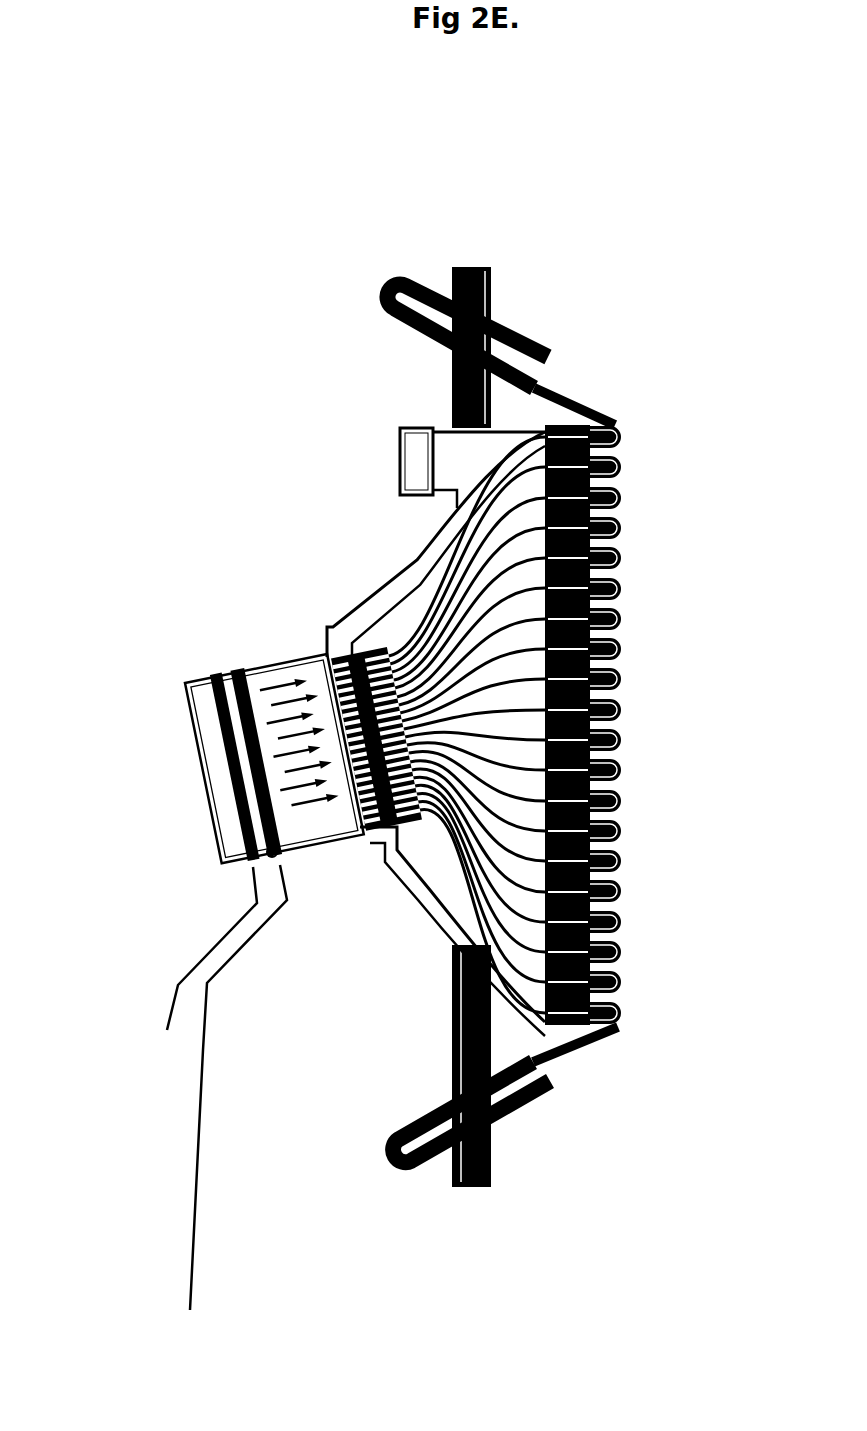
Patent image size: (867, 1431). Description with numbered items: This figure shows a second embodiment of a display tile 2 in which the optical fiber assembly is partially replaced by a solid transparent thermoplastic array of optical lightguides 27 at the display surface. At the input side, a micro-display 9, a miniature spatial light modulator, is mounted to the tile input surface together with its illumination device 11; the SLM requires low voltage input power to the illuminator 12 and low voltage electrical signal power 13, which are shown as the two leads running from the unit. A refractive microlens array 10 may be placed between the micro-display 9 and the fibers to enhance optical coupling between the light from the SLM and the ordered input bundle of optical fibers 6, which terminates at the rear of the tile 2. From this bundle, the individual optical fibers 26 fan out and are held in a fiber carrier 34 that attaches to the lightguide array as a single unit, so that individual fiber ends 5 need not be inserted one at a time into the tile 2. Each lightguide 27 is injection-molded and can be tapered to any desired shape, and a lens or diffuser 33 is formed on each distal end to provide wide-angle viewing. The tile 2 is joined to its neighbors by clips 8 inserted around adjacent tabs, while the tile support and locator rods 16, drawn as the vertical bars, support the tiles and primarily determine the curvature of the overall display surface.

The tile 2 is at (642, 513).
The distal fiber optic end 5 is at (614, 586).
The ordered input bundle of optical fibers 6 is at (381, 637).
The clip 8 is at (358, 285).
The micro-display 9 is at (242, 668).
The refractive microlens array 10 is at (352, 796).
The illumination device 11 is at (204, 664).
The low voltage input power to the illuminator 12 is at (138, 1008).
The low voltage electrical signal power 13 is at (160, 1247).
The flexible support rod 16 is at (477, 1224).
The optical fiber 26 is at (490, 537).
The optical lightguide 27 is at (636, 631).
The lens or diffuser 33 is at (649, 725).
The fiber carrier 34 is at (536, 477).